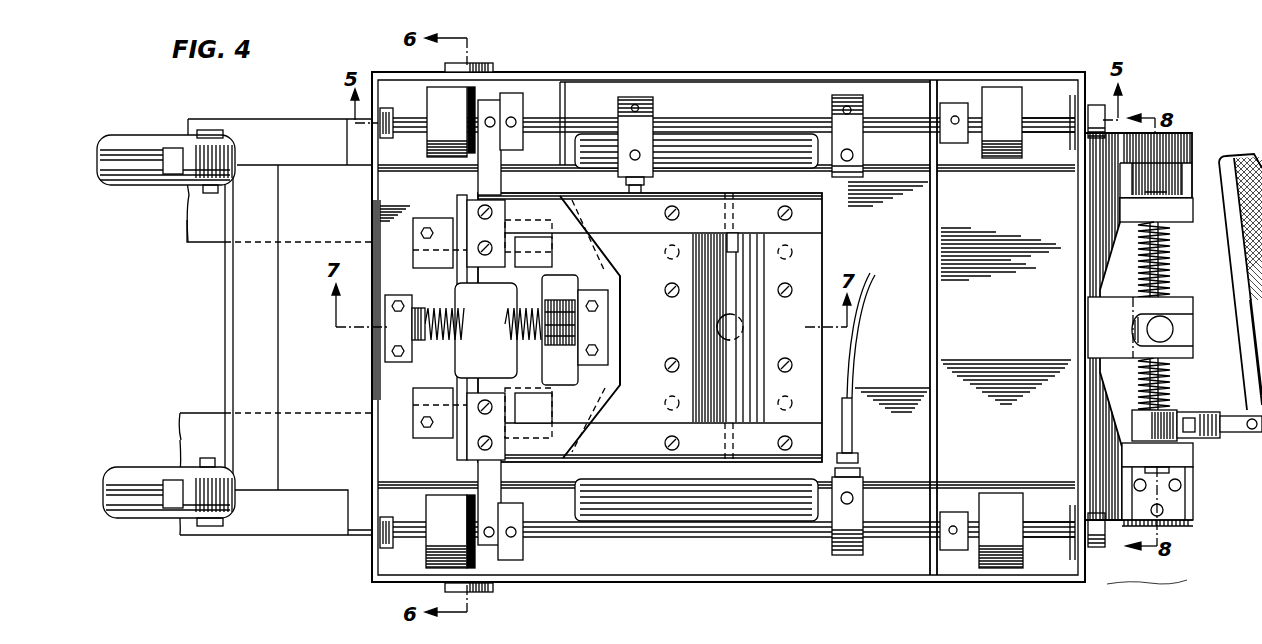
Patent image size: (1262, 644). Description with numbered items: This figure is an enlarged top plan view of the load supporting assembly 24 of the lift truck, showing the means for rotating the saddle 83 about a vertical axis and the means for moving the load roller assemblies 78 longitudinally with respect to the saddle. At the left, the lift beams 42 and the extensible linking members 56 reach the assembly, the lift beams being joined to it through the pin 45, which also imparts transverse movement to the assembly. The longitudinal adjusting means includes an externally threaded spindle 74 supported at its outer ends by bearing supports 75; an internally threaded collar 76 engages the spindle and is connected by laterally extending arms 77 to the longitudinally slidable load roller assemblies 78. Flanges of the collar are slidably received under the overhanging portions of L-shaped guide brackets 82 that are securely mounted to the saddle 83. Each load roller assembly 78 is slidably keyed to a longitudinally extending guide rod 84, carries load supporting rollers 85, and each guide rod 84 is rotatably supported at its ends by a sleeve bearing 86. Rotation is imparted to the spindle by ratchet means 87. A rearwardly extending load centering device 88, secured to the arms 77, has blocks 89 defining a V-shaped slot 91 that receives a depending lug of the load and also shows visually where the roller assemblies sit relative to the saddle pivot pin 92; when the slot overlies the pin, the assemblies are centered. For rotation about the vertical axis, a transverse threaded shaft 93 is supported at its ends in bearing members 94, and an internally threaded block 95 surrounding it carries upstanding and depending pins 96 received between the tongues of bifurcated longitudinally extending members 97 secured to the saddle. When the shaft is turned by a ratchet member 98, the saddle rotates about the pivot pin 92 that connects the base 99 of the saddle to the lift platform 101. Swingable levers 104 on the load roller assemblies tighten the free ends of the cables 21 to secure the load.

The cables 21 is at (648, 316).
The load supporting assembly 24 is at (852, 72).
The lift beams 42 is at (202, 230).
The pin 45 is at (482, 60).
The extensible linking members 56 is at (128, 138).
The externally threaded spindle 74 is at (447, 313).
The bearing supports 75 is at (402, 362).
The internally threaded collar 76 is at (490, 334).
The laterally extending arms 77 is at (478, 185).
The load roller assemblies 78 is at (957, 150).
The L-shaped guide brackets 82 is at (433, 217).
The saddle 83 is at (611, 80).
The guide rod 84 is at (1042, 118).
The load supporting rollers 85 is at (451, 113).
The sleeve bearing 86 is at (393, 102).
The ratchet means 87 is at (561, 298).
The load centering device 88 is at (834, 236).
The blocks 89 is at (661, 385).
The V-shaped slot 91 is at (730, 250).
The saddle pivot pin 92 is at (735, 308).
The transverse threaded shaft 93 is at (1174, 271).
The bearing members 94 is at (1183, 217).
The internally threaded block 95 is at (1183, 337).
The pins 96 is at (1175, 328).
The bifurcated longitudinally extending members 97 is at (1112, 333).
The ratchet member 98 is at (1250, 386).
The base 99 is at (1018, 331).
The lift platform 101 is at (313, 326).
The swingable levers 104 is at (748, 140).